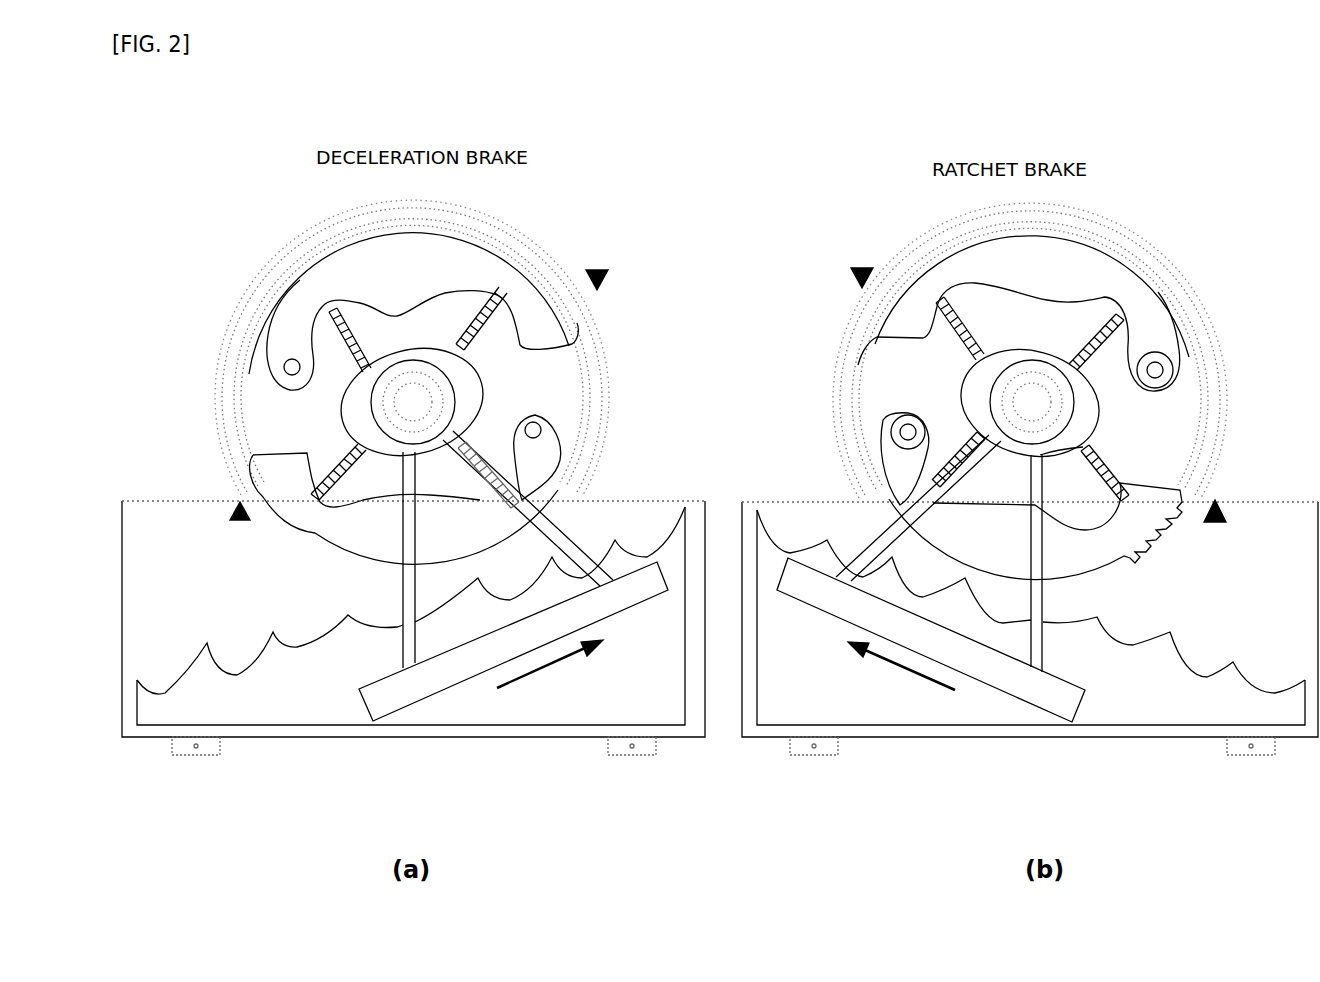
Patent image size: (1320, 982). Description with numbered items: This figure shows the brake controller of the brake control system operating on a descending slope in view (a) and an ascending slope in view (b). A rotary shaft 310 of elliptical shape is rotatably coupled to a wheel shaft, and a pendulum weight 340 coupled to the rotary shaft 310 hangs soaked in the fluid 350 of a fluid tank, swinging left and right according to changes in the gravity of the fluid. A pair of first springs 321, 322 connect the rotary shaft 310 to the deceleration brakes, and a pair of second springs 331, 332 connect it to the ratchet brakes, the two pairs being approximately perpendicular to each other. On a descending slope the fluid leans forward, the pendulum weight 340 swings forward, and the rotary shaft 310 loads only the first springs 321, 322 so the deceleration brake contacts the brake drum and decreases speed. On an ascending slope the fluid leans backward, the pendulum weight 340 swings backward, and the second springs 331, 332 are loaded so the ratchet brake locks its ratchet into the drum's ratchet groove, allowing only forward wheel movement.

The rotary shaft 310 is at (470, 395).
The first spring 321 is at (477, 318).
The first spring 322 is at (333, 480).
The second spring 331 is at (970, 317).
The second spring 332 is at (1103, 467).
The pendulum weight 340 is at (438, 675).
The fluid 350 is at (202, 643).